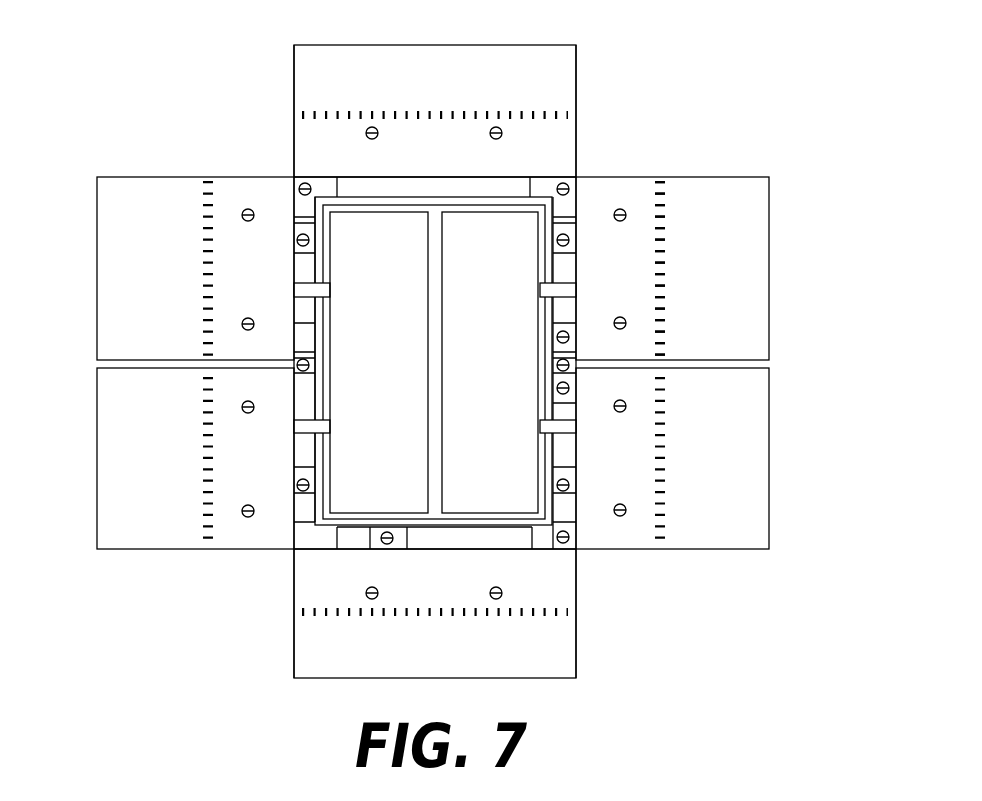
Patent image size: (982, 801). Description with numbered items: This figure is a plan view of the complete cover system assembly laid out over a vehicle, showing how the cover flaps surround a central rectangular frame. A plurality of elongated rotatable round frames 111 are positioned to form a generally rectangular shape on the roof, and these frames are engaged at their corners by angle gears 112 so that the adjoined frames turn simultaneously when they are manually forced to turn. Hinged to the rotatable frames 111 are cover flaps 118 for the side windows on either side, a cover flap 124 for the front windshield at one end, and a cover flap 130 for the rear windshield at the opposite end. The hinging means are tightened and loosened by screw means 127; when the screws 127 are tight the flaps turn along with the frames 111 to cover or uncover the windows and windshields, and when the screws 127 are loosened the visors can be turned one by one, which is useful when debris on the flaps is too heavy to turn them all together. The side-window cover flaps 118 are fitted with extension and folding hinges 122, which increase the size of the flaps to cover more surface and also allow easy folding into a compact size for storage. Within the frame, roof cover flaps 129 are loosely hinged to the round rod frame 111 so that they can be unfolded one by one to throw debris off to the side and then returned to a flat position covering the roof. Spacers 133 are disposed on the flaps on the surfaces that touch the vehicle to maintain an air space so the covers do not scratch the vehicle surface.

The elongated rotatable round frame 111 is at (517, 178).
The angle gear 112 is at (298, 188).
The cover flap for side windows 118 is at (140, 320).
The extension and folding hinge 122 is at (663, 198).
The cover flap for front windshield 124 is at (342, 81).
The screw means 127 is at (572, 233).
The roof cover flap 129 is at (490, 448).
The cover flap for rear windshield 130 is at (303, 655).
The spacer 133 is at (627, 215).